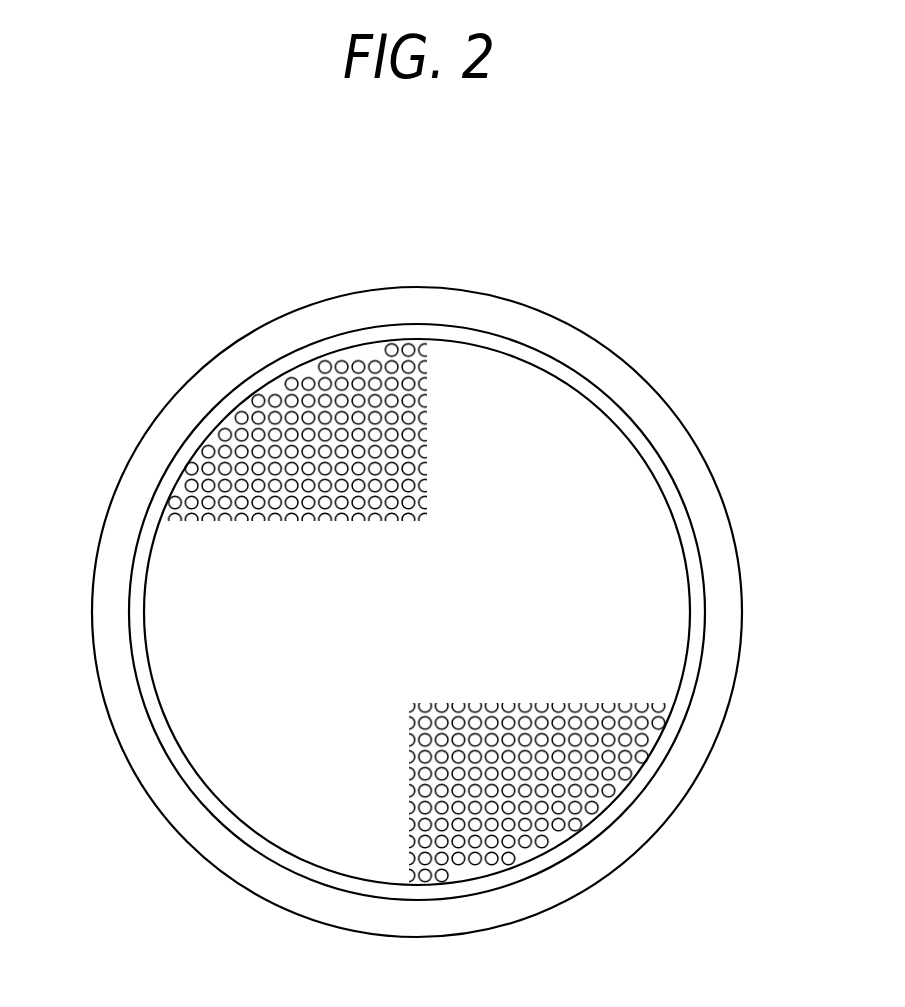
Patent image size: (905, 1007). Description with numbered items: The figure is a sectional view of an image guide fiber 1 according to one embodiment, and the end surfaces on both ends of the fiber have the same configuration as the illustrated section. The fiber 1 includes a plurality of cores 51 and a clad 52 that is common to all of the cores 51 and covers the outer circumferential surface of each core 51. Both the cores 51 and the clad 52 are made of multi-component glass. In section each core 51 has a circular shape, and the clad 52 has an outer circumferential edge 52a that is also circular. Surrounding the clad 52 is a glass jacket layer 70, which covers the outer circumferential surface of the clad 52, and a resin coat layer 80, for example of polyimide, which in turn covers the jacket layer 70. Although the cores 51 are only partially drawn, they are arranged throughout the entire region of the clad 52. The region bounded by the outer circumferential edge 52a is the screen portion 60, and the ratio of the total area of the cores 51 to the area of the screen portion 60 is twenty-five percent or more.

The image guide fiber 1 is at (428, 622).
The cores 51 is at (257, 452).
The clad 52 is at (428, 580).
The outer circumferential edge 52a is at (547, 857).
The screen portion 60 is at (372, 840).
The glass jacket layer 70 is at (232, 402).
The resin coat layer 80 is at (255, 347).